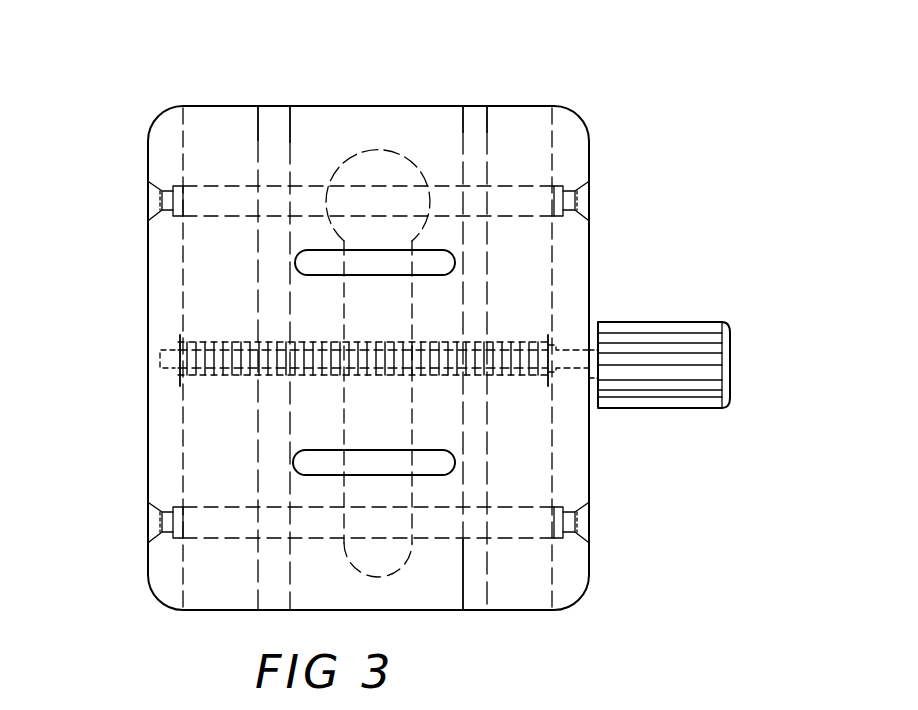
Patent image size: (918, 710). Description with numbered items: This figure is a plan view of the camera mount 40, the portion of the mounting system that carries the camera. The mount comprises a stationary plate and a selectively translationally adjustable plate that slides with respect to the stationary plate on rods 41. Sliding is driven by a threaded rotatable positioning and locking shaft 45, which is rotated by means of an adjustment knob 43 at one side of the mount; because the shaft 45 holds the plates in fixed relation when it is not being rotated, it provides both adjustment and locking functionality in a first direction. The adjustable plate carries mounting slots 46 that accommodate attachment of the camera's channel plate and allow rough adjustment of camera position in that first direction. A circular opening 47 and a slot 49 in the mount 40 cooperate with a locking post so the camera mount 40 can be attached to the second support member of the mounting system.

The camera mount 40 is at (148, 403).
The rods 41 is at (528, 188).
The adjustment knob 43 is at (703, 320).
The threaded rotatable positioning and locking shaft 45 is at (505, 346).
The mounting slots 46 is at (310, 273).
The circular opening 47 is at (398, 151).
The slot 49 is at (413, 415).